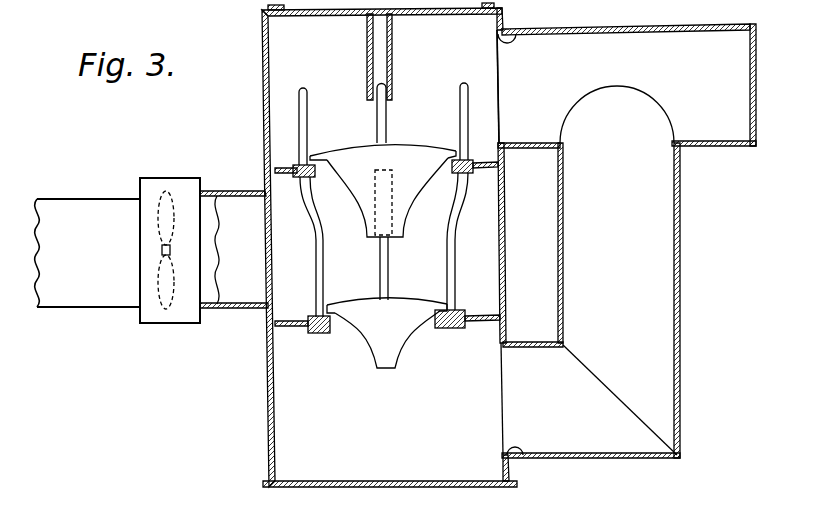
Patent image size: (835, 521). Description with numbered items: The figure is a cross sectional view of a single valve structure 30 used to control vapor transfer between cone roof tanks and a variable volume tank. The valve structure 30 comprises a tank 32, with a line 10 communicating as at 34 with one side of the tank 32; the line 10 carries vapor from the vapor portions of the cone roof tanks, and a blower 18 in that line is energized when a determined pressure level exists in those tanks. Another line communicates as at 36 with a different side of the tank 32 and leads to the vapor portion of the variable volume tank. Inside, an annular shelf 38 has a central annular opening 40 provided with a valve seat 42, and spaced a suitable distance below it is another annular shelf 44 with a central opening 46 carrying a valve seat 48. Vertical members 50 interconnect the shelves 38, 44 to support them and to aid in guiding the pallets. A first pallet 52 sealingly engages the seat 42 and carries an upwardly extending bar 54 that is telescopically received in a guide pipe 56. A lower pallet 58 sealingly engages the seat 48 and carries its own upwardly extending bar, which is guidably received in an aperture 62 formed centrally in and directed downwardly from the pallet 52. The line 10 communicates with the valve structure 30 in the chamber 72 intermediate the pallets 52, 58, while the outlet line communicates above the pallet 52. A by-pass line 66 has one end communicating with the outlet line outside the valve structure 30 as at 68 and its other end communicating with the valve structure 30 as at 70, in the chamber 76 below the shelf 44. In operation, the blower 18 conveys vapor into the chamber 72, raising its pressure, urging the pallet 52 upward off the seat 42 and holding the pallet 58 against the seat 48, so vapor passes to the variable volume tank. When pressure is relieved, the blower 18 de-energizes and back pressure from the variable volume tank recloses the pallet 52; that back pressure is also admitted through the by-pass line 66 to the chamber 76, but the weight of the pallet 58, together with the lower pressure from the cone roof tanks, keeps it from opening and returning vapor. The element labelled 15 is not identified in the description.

The line 10 is at (86, 307).
The outlet duct wall 15 is at (730, 26).
The blower 18 is at (166, 323).
The valve structure 30 is at (306, 6).
The tank 32 is at (268, 432).
The communication of line with tank 34 is at (265, 305).
The communication of line with tank 36 is at (518, 31).
The annular shelf 38 is at (505, 160).
The central annular opening 40 is at (440, 176).
The valve seat 42 is at (456, 155).
The annular shelf 44 is at (497, 317).
The central opening 46 is at (437, 328).
The valve seat 48 is at (447, 310).
The vertical members 50 is at (315, 281).
The first pallet 52 is at (413, 150).
The upwardly extending bar 54 is at (387, 112).
The guide pipe 56 is at (367, 48).
The lower pallet 58 is at (408, 303).
The aperture 62 is at (380, 205).
The by-pass line 66 is at (680, 262).
The by-pass line connection 68 is at (676, 145).
The by-pass line connection 70 is at (518, 456).
The chamber 72 is at (360, 266).
The chamber 76 is at (367, 433).